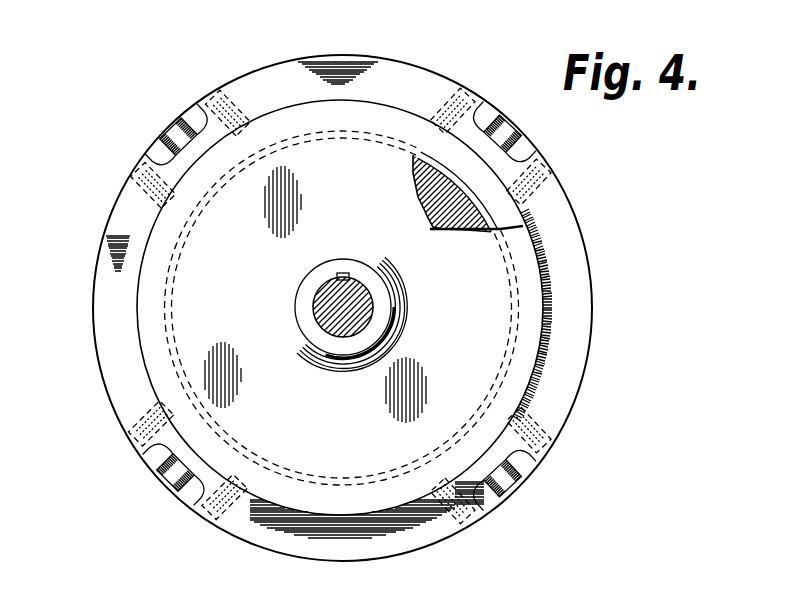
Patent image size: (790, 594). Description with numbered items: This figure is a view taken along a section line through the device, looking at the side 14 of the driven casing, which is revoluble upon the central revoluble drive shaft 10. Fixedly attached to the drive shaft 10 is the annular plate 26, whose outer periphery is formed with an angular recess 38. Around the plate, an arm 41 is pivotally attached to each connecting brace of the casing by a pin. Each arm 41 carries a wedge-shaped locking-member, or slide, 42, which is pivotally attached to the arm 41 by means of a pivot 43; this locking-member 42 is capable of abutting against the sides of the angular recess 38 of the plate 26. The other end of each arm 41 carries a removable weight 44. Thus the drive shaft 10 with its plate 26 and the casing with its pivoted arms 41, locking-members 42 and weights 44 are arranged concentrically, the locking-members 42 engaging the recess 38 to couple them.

The drive shaft 10 is at (362, 315).
The side of driven casing 14 is at (405, 80).
The annular plate 26 is at (480, 282).
The angular recess 38 is at (517, 220).
The arm 41 is at (175, 133).
The locking-member 42 is at (258, 152).
The pivot 43 is at (197, 118).
The removable weight 44 is at (468, 125).